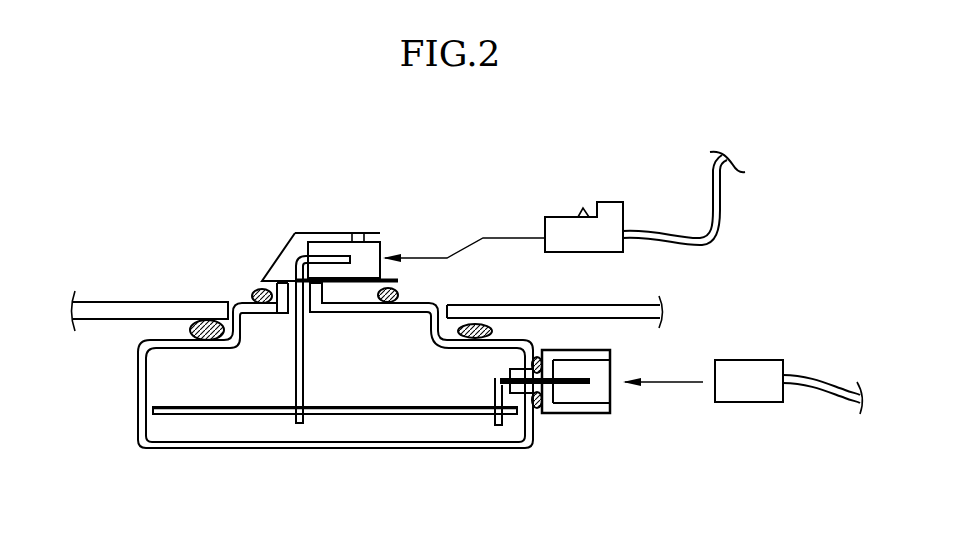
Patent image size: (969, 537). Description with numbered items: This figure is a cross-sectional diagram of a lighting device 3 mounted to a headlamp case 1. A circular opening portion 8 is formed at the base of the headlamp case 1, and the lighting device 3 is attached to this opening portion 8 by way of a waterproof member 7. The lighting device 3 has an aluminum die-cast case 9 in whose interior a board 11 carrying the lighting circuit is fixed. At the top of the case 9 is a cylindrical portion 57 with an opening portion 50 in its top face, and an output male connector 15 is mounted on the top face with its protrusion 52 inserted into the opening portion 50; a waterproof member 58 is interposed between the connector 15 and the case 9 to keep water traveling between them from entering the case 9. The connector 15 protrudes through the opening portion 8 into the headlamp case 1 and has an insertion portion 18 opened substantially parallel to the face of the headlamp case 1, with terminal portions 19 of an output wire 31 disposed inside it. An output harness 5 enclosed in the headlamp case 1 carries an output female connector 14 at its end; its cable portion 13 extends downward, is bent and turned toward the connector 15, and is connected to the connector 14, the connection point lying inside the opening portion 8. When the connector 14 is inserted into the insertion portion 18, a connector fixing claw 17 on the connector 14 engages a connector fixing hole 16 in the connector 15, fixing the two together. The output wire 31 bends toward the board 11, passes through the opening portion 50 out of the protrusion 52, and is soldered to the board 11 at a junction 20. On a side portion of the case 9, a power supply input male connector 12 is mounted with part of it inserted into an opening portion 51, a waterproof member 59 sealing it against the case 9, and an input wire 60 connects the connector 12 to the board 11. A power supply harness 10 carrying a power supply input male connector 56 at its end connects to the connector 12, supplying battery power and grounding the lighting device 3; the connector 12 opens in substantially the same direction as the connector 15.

The headlamp case 1 is at (102, 302).
The lighting device 3 is at (285, 366).
The output harness 5 is at (706, 227).
The waterproof member 7 is at (205, 320).
The opening portion 8 is at (233, 302).
The case 9 is at (137, 352).
The power supply harness 10 is at (818, 368).
The board 11 is at (200, 415).
The power supply input male connector 12 is at (598, 413).
The cable portion 13 is at (706, 243).
The output female connector 14 is at (599, 200).
The output male connector 15 is at (339, 208).
The connector fixing hole 16 is at (357, 232).
The connector fixing claw 17 is at (582, 208).
The insertion portion 18 is at (383, 250).
The terminal portions 19 is at (337, 255).
The junction 20 is at (300, 332).
The output wire 31 is at (305, 343).
The opening portion 50 is at (320, 305).
The opening portion 51 is at (523, 352).
The protrusion 52 is at (290, 307).
The power supply input male connector 56 is at (747, 360).
The cylindrical portion 57 is at (452, 305).
The waterproof member 58 is at (400, 293).
The waterproof member 59 is at (540, 352).
The input wire 60 is at (496, 383).